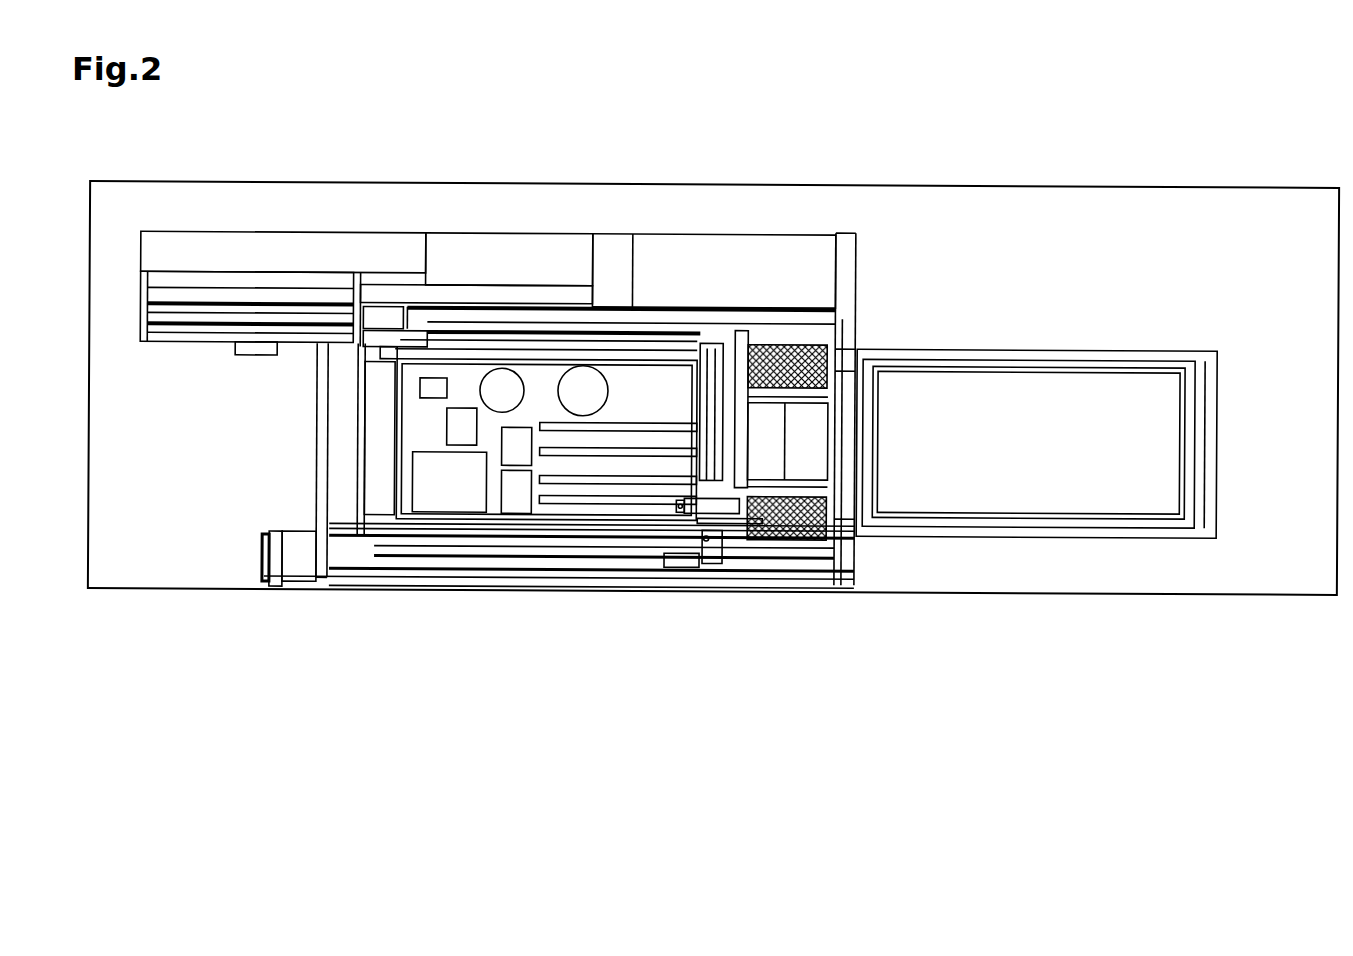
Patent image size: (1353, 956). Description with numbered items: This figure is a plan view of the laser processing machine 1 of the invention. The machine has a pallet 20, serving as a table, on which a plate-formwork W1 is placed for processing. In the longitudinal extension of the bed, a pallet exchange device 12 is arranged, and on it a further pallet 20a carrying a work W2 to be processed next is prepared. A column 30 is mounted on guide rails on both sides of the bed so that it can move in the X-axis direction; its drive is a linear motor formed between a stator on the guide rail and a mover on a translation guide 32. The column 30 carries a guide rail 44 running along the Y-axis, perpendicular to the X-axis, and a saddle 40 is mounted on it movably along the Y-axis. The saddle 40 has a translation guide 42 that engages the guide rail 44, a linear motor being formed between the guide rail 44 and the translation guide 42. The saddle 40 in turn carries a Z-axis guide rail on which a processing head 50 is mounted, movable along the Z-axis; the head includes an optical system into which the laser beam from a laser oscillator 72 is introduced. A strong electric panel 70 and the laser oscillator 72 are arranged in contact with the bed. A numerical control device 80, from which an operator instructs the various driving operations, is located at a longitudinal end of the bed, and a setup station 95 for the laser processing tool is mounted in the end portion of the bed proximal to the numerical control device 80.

The laser processing machine 1 is at (891, 158).
The strong electric panel 70 is at (340, 242).
The laser oscillator 72 is at (775, 243).
The plate-formwork W1 is at (638, 384).
The work W2 is at (1022, 385).
The guide rail 44 is at (713, 327).
The setup station 95 is at (373, 418).
The numerical control device 80 is at (298, 571).
The pallet 20 is at (492, 508).
The pallet 20a is at (1133, 510).
The processing head 50 is at (678, 504).
The translation guide 32 is at (680, 562).
The column 30 is at (712, 532).
The translation guide 42 is at (727, 519).
The saddle 40 is at (753, 538).
The pallet exchange device 12 is at (1020, 528).